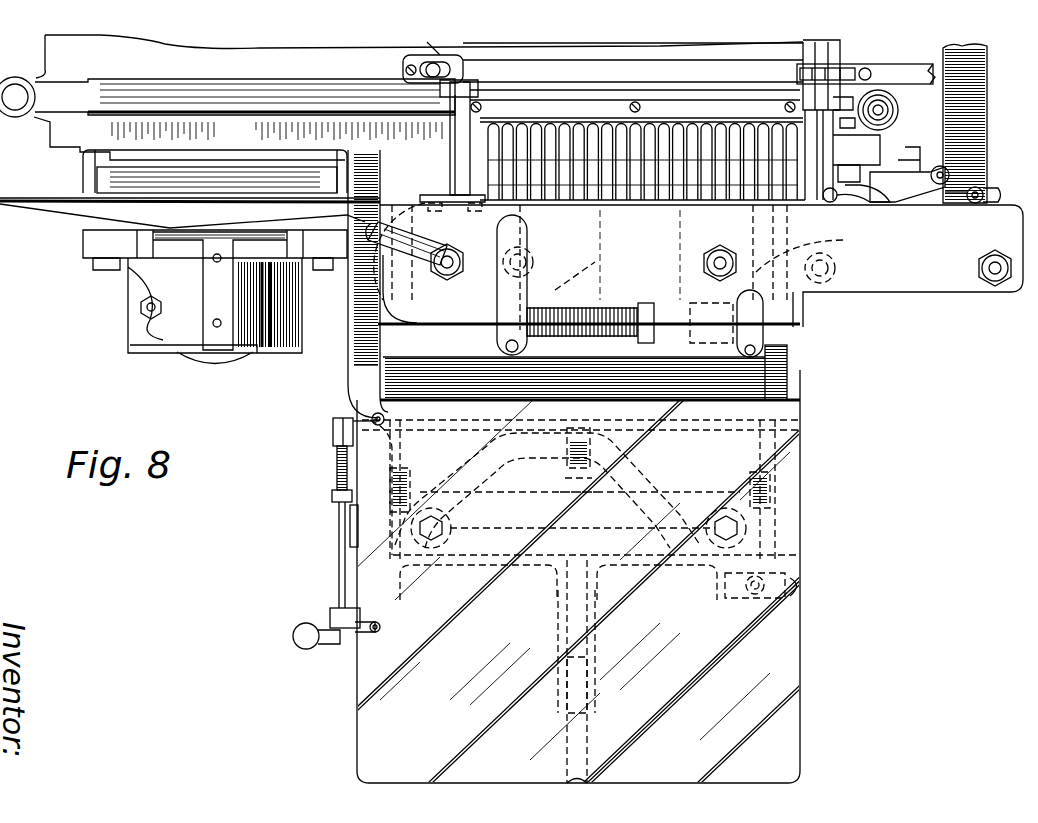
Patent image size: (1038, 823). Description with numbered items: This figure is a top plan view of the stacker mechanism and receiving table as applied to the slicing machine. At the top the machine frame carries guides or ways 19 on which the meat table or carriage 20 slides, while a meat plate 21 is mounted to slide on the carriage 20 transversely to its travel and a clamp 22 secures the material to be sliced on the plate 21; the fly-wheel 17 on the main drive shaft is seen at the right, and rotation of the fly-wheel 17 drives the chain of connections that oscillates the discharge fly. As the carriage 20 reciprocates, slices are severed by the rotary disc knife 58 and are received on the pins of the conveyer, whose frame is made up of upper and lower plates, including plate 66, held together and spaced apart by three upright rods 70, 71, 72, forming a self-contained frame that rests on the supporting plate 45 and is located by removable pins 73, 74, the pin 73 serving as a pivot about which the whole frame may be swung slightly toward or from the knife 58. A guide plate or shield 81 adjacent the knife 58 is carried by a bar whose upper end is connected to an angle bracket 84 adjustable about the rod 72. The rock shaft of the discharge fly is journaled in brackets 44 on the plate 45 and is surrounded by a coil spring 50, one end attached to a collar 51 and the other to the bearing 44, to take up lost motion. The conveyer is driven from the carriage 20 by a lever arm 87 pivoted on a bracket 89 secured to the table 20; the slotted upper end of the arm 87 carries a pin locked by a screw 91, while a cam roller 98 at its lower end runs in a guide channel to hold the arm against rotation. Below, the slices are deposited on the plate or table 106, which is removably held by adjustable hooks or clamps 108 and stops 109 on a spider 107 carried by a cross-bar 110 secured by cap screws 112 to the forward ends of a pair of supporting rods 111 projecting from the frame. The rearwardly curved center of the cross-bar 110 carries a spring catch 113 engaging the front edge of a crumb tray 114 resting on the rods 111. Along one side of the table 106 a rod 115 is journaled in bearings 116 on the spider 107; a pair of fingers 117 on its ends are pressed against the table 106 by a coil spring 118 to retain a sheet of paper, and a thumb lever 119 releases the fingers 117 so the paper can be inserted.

The fly-wheel 17 is at (975, 105).
The guides or ways 19 is at (305, 92).
The meat table or carriage 20 is at (462, 134).
The meat plate 21 is at (795, 54).
The clamp 22 is at (660, 72).
The brackets 44 is at (620, 293).
The supporting plate 45 is at (600, 286).
The coil spring 50 is at (583, 340).
The collar 51 is at (645, 340).
The rotary disc knife 58 is at (213, 197).
The plate 66 is at (912, 277).
The upright rod or bar 70 is at (990, 277).
The upright rod or bar 71 is at (706, 262).
The upright rod or bar 72 is at (452, 258).
The removable pin 73 is at (838, 269).
The removable pin 74 is at (522, 258).
The guide plate or shield 81 is at (445, 290).
The angle bracket 84 is at (411, 243).
The lever arm 87 is at (922, 187).
The bracket 89 is at (828, 142).
The screw 91 is at (982, 188).
The cam roller 98 is at (858, 182).
The plate or table 106 is at (778, 672).
The spider 107 is at (640, 568).
The adjustable hooks or clamps 108 is at (590, 738).
The stops 109 is at (350, 528).
The cross-bar 110 is at (665, 505).
The supporting rods 111 is at (385, 445).
The cap screws 112 is at (360, 560).
The spring catch 113 is at (590, 438).
The crumb tray 114 is at (357, 302).
The rod 115 is at (340, 592).
The bearings 116 is at (335, 424).
The fingers 117 is at (375, 412).
The coil spring 118 is at (337, 476).
The thumb lever 119 is at (310, 640).